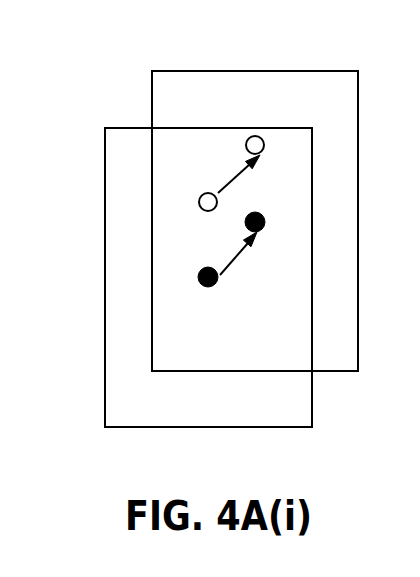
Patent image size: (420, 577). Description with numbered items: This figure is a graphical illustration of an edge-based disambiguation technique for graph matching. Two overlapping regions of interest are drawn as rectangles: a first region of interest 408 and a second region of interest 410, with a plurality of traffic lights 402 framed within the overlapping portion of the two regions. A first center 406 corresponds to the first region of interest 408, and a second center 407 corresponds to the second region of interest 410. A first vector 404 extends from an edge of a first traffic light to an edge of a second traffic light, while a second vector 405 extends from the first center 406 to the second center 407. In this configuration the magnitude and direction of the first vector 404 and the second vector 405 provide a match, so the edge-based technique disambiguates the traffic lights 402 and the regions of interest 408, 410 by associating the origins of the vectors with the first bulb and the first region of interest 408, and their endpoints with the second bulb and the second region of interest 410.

The traffic lights 402 is at (253, 136).
The first vector 404 is at (236, 185).
The second vector 405 is at (260, 237).
The first center 406 is at (207, 267).
The second center 407 is at (263, 213).
The first region of interest 408 is at (118, 128).
The second region of interest 410 is at (173, 71).